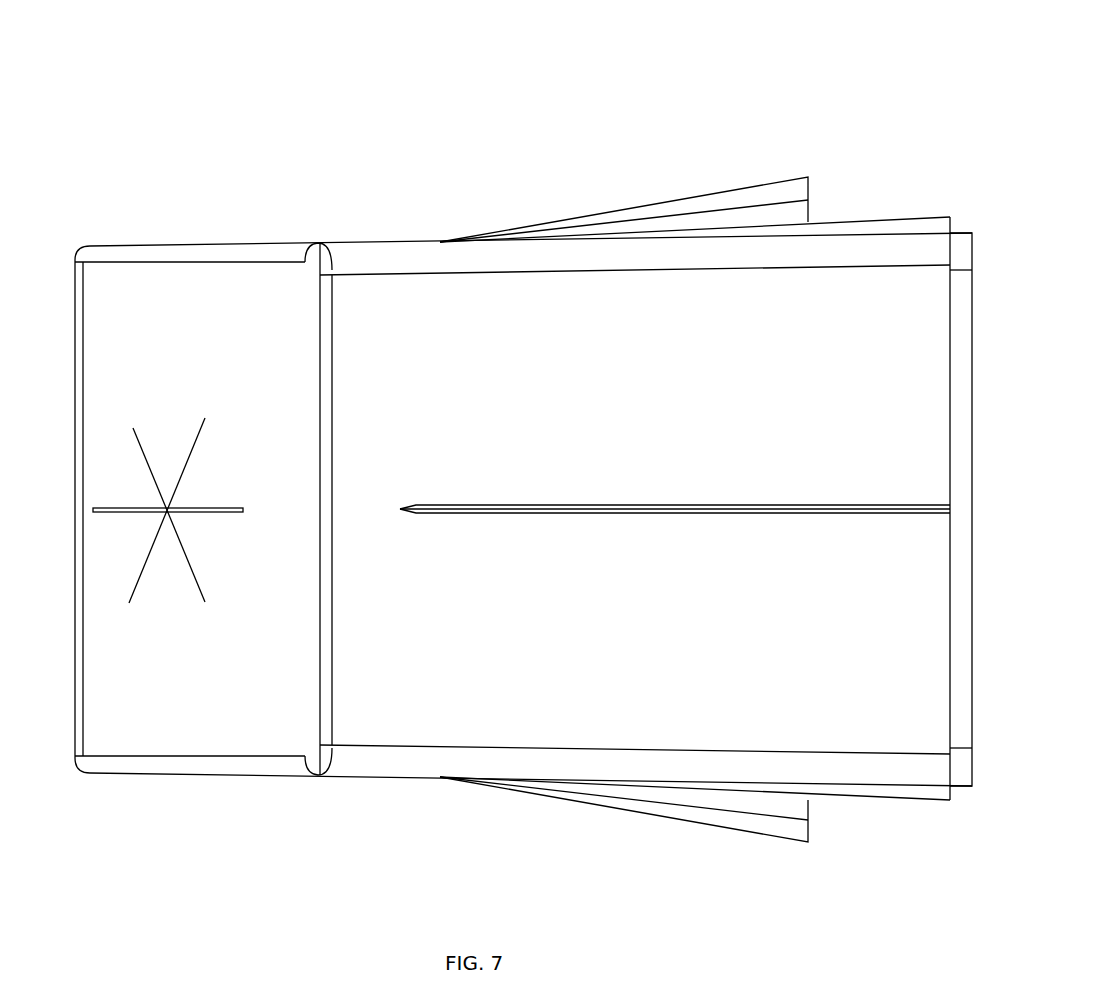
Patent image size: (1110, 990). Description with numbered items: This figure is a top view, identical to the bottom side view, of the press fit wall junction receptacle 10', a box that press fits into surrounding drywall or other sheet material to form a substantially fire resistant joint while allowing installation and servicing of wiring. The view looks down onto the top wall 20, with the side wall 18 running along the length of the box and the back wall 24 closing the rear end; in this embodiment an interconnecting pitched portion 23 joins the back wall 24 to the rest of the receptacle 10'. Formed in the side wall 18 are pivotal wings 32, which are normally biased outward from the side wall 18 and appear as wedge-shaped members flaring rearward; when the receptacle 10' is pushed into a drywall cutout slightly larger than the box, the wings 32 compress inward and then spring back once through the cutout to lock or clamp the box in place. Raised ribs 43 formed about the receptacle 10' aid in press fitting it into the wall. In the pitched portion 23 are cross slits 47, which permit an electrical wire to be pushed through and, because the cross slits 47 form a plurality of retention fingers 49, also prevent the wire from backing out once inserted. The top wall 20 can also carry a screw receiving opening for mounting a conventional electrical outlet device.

The junction receptacle 10' is at (321, 75).
The side wall 18 is at (393, 240).
The top wall 20 is at (641, 510).
The pitched portion 23 is at (201, 509).
The back wall 24 is at (73, 282).
The pivotal wings 32 is at (692, 195).
The raised ribs 43 is at (494, 507).
The cross slits 47 is at (133, 428).
The retention fingers 49 is at (158, 443).